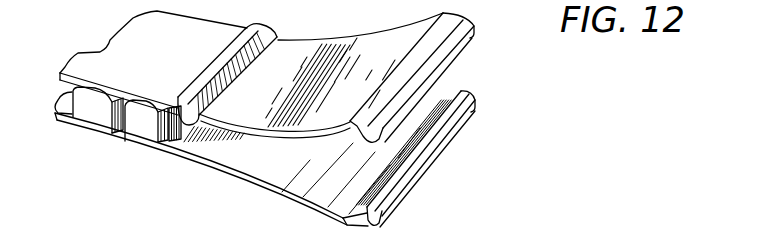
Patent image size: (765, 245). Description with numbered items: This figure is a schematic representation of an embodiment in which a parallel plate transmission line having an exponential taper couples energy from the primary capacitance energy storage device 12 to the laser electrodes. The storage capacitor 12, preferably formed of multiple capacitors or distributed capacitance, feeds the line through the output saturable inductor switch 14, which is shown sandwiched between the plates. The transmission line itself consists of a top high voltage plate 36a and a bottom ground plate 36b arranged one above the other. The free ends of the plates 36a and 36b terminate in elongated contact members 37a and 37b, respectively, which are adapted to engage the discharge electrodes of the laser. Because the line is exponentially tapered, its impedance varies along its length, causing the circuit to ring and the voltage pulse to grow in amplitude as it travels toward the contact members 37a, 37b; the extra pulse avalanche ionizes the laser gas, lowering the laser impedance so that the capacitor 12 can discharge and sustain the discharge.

The primary capacitance energy storage device 12 is at (135, 130).
The output saturable inductor switch 14 is at (181, 132).
The top high voltage plate 36a is at (351, 42).
The bottom ground plate 36b is at (285, 190).
The elongated contact member 37a is at (462, 41).
The elongated contact member 37b is at (412, 181).